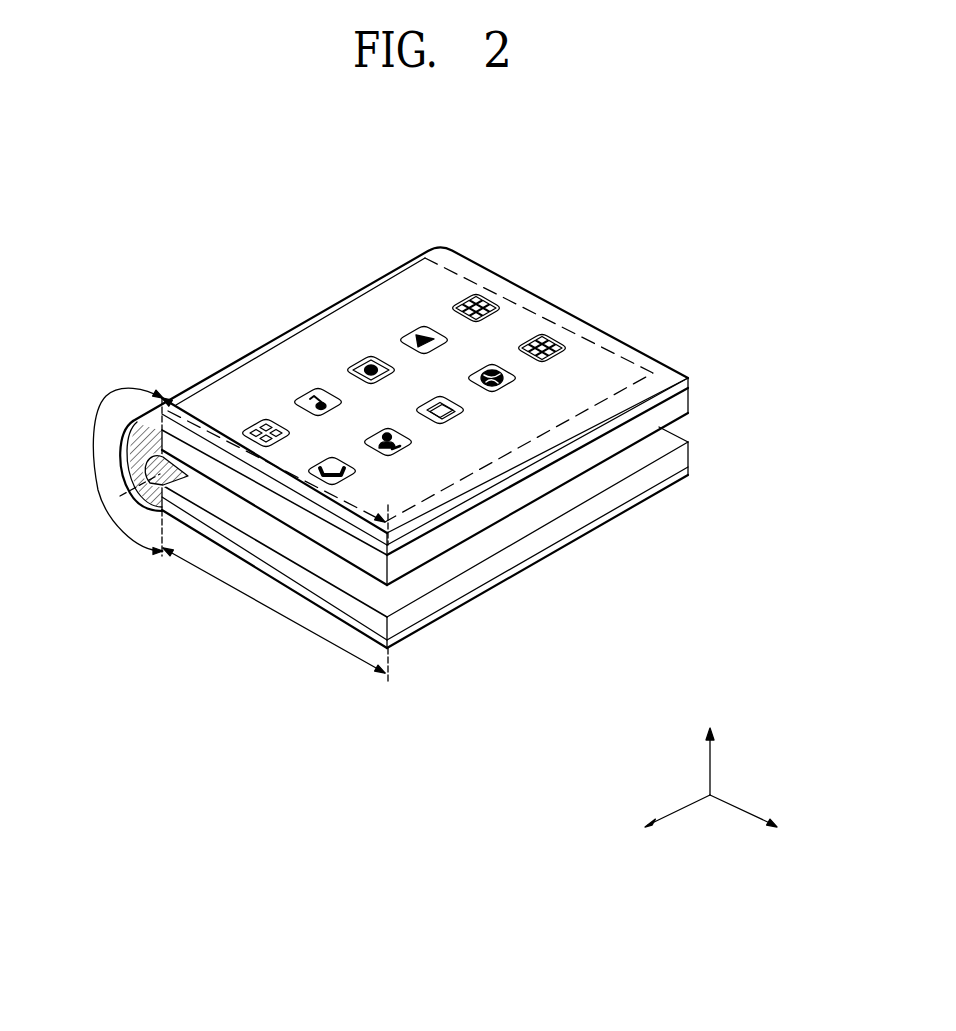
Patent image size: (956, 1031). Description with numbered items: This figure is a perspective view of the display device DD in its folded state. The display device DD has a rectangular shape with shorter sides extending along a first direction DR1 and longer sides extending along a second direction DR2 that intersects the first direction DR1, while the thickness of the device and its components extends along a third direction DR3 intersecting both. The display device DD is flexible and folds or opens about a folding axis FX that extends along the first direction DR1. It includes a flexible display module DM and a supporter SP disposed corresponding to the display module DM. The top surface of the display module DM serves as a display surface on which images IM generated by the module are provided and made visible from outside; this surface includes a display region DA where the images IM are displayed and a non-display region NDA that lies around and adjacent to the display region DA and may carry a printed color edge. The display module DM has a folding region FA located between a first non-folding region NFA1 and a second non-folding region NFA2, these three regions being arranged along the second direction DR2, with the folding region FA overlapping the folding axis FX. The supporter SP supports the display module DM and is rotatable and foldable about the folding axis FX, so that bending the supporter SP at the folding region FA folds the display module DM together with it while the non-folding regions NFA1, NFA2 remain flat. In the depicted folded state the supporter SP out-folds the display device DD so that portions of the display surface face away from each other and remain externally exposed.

The display device DD is at (637, 218).
The display module DM is at (578, 540).
The supporter SP is at (621, 495).
The display region DA is at (610, 368).
The non-display region NDA is at (556, 322).
The image IM is at (485, 302).
The folding region FA is at (114, 472).
The folding axis FX is at (116, 498).
The first non-folding region NFA1 is at (275, 615).
The second non-folding region NFA2 is at (275, 467).
The first direction DR1 is at (656, 822).
The second direction DR2 is at (768, 822).
The third direction DR3 is at (711, 742).